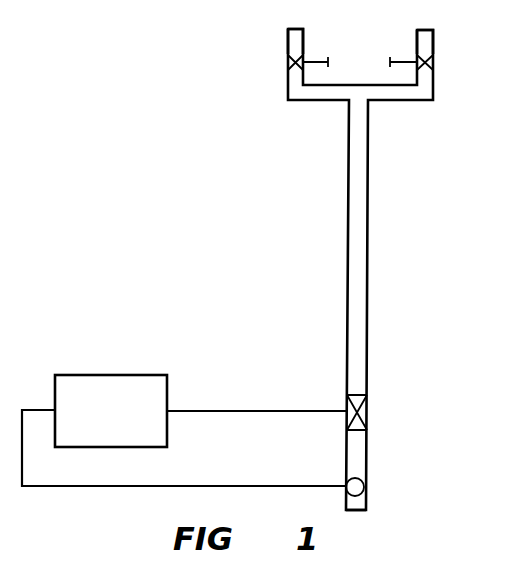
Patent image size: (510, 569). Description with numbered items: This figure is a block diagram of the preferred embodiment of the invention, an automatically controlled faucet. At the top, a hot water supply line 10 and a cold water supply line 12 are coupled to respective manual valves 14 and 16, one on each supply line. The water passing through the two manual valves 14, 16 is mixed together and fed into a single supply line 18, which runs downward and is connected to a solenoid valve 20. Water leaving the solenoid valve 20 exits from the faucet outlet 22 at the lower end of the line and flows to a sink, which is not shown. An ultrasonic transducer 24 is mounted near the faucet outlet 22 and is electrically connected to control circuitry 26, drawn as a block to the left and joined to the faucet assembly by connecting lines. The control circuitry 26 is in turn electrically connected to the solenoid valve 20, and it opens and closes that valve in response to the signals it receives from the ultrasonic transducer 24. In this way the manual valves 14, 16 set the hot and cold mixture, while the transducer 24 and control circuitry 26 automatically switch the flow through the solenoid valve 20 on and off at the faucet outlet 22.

The hot water supply line 10 is at (288, 40).
The cold water supply line 12 is at (433, 40).
The manual valve 14 is at (288, 64).
The manual valve 16 is at (433, 62).
The supply line 18 is at (368, 168).
The solenoid valve 20 is at (367, 409).
The faucet outlet 22 is at (345, 511).
The ultrasonic transducer 24 is at (348, 482).
The control circuitry 26 is at (131, 375).